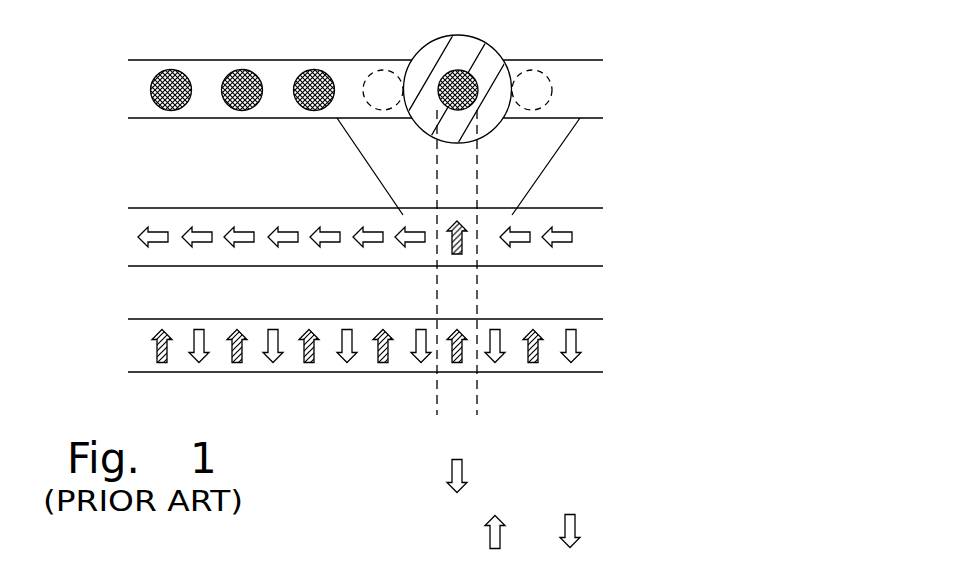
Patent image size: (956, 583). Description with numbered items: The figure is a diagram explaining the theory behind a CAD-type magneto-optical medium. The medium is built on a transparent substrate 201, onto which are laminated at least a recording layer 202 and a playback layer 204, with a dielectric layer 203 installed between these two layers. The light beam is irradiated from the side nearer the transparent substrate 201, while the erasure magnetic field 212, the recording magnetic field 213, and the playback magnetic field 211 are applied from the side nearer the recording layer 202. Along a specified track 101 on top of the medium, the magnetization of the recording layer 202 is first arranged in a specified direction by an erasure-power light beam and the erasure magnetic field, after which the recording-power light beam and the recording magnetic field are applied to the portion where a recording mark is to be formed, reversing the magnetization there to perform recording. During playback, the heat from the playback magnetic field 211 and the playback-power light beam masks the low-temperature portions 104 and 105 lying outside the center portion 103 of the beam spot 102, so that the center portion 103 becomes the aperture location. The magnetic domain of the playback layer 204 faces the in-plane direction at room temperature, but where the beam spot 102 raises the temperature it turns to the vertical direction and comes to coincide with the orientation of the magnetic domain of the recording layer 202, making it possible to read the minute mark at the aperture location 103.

The track 101 is at (597, 81).
The beam spot 102 is at (493, 62).
The center portion 103 is at (456, 70).
The low-temperature portion 104 is at (542, 98).
The low-temperature portion 105 is at (381, 87).
The transparent substrate 201 is at (577, 178).
The recording layer 202 is at (590, 342).
The dielectric layer 203 is at (592, 283).
The playback layer 204 is at (592, 222).
The playback magnetic field 211 is at (467, 470).
The erasure magnetic field 212 is at (483, 537).
The recording magnetic field 213 is at (592, 530).